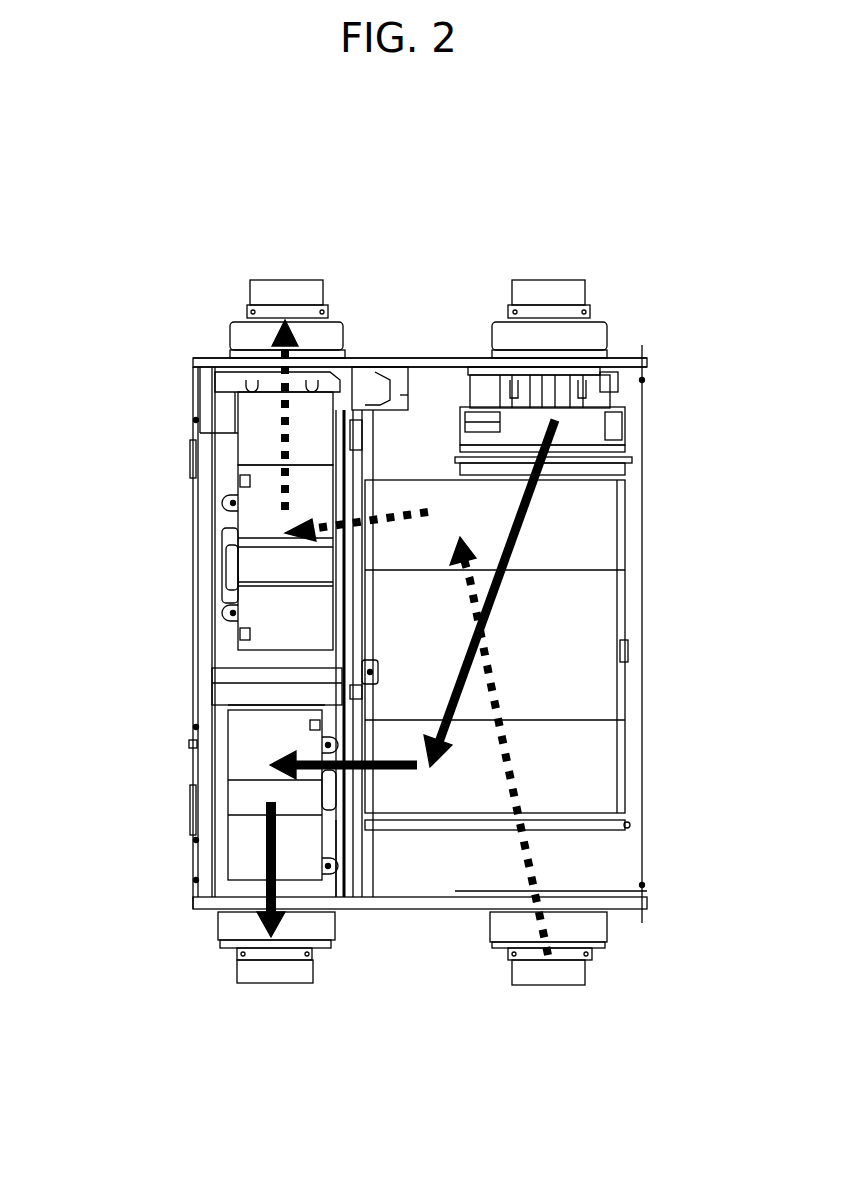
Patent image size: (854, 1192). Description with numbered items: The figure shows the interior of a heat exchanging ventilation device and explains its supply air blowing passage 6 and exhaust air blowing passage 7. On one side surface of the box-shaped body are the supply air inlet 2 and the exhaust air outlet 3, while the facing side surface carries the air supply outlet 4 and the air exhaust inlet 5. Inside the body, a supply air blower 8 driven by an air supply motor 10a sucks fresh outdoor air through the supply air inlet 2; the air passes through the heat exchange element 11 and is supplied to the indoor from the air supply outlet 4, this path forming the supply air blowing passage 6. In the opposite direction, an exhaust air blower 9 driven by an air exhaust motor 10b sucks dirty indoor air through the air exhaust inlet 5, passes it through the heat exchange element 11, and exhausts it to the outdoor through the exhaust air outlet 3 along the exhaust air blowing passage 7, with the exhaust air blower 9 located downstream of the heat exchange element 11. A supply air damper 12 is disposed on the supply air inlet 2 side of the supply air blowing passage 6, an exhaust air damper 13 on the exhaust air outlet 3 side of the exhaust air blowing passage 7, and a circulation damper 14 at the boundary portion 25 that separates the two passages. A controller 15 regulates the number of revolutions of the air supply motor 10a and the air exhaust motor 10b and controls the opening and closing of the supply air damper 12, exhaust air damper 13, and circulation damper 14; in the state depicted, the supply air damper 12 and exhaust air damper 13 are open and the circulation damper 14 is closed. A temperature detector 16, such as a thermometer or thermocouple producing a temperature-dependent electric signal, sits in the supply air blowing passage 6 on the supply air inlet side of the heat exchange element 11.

The supply air inlet 2 is at (565, 283).
The exhaust air outlet 3 is at (275, 280).
The air supply outlet 4 is at (272, 983).
The air exhaust inlet 5 is at (553, 985).
The supply air blowing passage 6 is at (270, 860).
The exhaust air blowing passage 7 is at (280, 422).
The supply air blower 8 is at (247, 755).
The exhaust air blower 9 is at (255, 513).
The air supply motor 10a is at (318, 840).
The air exhaust motor 10b is at (222, 600).
The heat exchange element 11 is at (557, 653).
The supply air damper 12 is at (583, 415).
The exhaust air damper 13 is at (257, 383).
The circulation damper 14 is at (383, 382).
The controller 15 is at (228, 698).
The temperature detector 16 is at (568, 368).
The boundary portion 25 is at (362, 537).